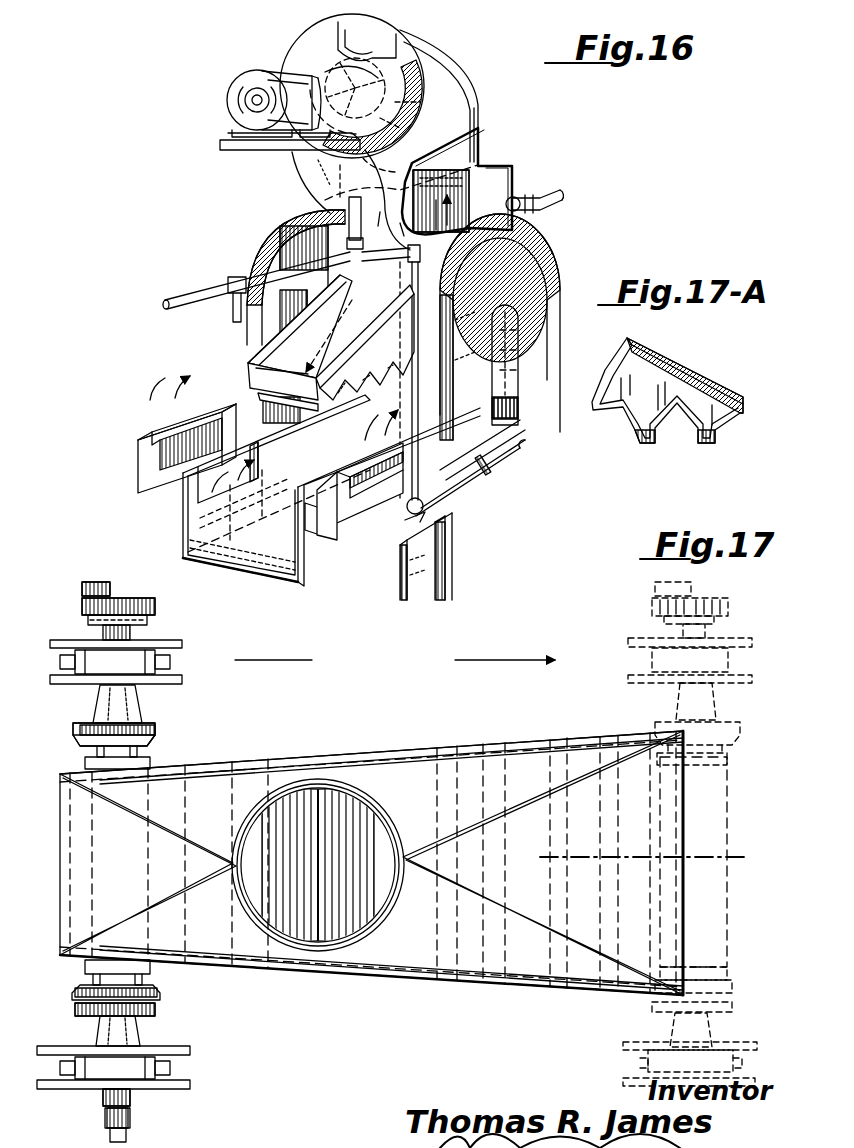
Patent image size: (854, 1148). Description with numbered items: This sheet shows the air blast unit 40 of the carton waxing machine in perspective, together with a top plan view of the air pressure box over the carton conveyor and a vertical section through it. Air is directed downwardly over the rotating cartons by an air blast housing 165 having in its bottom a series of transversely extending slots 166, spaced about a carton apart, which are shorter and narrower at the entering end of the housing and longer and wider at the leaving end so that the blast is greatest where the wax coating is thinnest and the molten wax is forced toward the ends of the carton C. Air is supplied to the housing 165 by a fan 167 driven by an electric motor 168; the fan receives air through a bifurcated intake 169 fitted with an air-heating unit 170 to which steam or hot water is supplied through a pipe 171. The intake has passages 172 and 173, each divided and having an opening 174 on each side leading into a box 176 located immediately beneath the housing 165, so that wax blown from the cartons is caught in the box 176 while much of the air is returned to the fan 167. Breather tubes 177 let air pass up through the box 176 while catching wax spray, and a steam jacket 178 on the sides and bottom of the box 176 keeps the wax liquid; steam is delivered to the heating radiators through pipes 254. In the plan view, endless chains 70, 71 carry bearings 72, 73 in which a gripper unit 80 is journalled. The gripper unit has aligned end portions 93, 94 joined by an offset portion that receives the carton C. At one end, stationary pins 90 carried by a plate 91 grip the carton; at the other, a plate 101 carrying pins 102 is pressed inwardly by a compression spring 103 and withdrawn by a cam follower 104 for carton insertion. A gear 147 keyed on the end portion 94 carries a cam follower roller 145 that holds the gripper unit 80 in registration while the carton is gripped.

In FIG. 16, the air blast unit 40 is at (297, 190).
In FIG. 16, the cam follower roller 145 is at (505, 405).
In FIG. 17, the cam follower roller 145 is at (118, 569).
In FIG. 17, the gear 147 is at (153, 606).
In FIG. 16, the air blast housing 165 is at (360, 355).
In FIG. 17-A, the air blast housing 165 is at (692, 370).
In FIG. 17, the air blast housing 165 is at (452, 745).
In FIG. 17-A, the slots 166 is at (642, 447).
In FIG. 17, the slots 166 is at (250, 805).
In FIG. 16, the fan 167 is at (418, 80).
In FIG. 16, the electric motor 168 is at (264, 68).
In FIG. 16, the intake 169 is at (470, 122).
In FIG. 16, the air-heating unit 170 is at (498, 190).
In FIG. 16, the pipe 171 is at (548, 203).
In FIG. 16, the passage 172 is at (300, 236).
In FIG. 16, the passage 173 is at (532, 266).
In FIG. 16, the opening 174 is at (445, 470).
In FIG. 16, the box 176 is at (180, 530).
In FIG. 16, the breather tubes 177 is at (170, 500).
In FIG. 16, the steam jacket 178 is at (240, 572).
In FIG. 16, the pipes 254 is at (348, 209).
In FIG. 17, the endless chain 70 is at (182, 1048).
In FIG. 17, the endless chain 71 is at (182, 643).
In FIG. 17, the bearing 72 is at (140, 1083).
In FIG. 17, the bearing 73 is at (140, 664).
In FIG. 17, the gripper unit 80 is at (74, 722).
In FIG. 17, the stationary pins 90 is at (96, 752).
In FIG. 17, the plate 91 is at (150, 741).
In FIG. 17, the end portion 93 is at (115, 1030).
In FIG. 17, the end portion 94 is at (138, 711).
In FIG. 17, the plate 101 is at (160, 991).
In FIG. 17, the pins 102 is at (93, 979).
In FIG. 17, the compression spring 103 is at (156, 1007).
In FIG. 17, the cam follower 104 is at (106, 1124).
In FIG. 17, the carton C is at (85, 769).